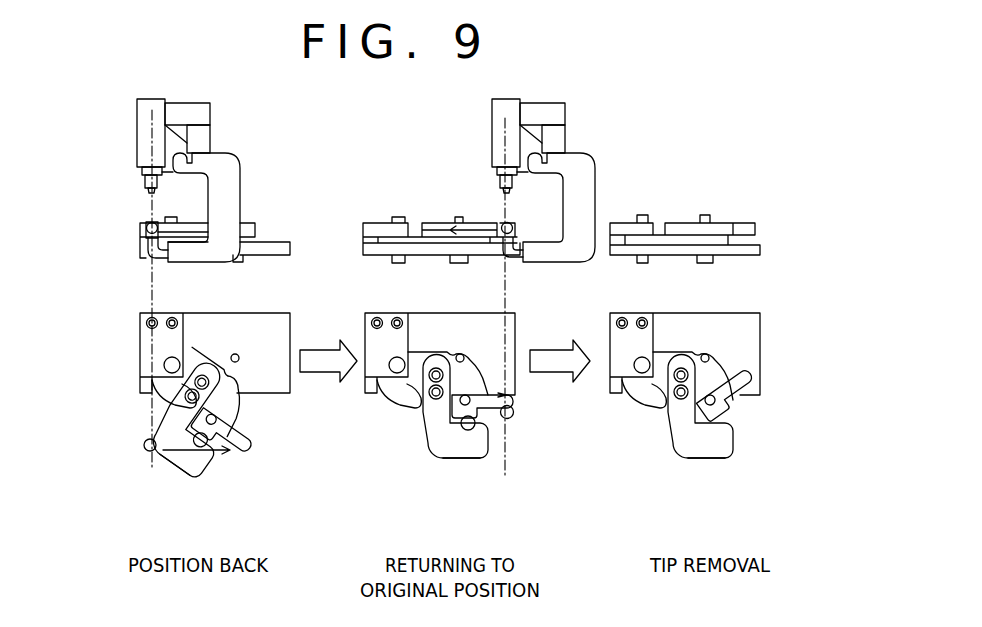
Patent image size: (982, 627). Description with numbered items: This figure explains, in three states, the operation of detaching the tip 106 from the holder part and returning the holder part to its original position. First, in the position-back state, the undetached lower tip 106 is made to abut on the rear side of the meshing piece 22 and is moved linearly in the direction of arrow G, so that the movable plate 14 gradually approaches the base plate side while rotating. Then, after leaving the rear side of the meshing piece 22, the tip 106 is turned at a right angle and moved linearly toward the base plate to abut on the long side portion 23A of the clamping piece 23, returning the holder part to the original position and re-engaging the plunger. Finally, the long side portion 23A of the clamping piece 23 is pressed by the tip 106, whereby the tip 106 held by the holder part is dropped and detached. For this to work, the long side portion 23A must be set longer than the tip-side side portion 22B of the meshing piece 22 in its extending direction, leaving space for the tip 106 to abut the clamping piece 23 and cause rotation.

The movable plate 14 is at (216, 370).
The meshing piece 22 is at (167, 463).
The tip-side side portion 22B is at (192, 477).
The clamping piece 23 is at (253, 438).
The long side portion 23A is at (501, 393).
The tip 106 is at (140, 232).
The arrow G is at (197, 467).